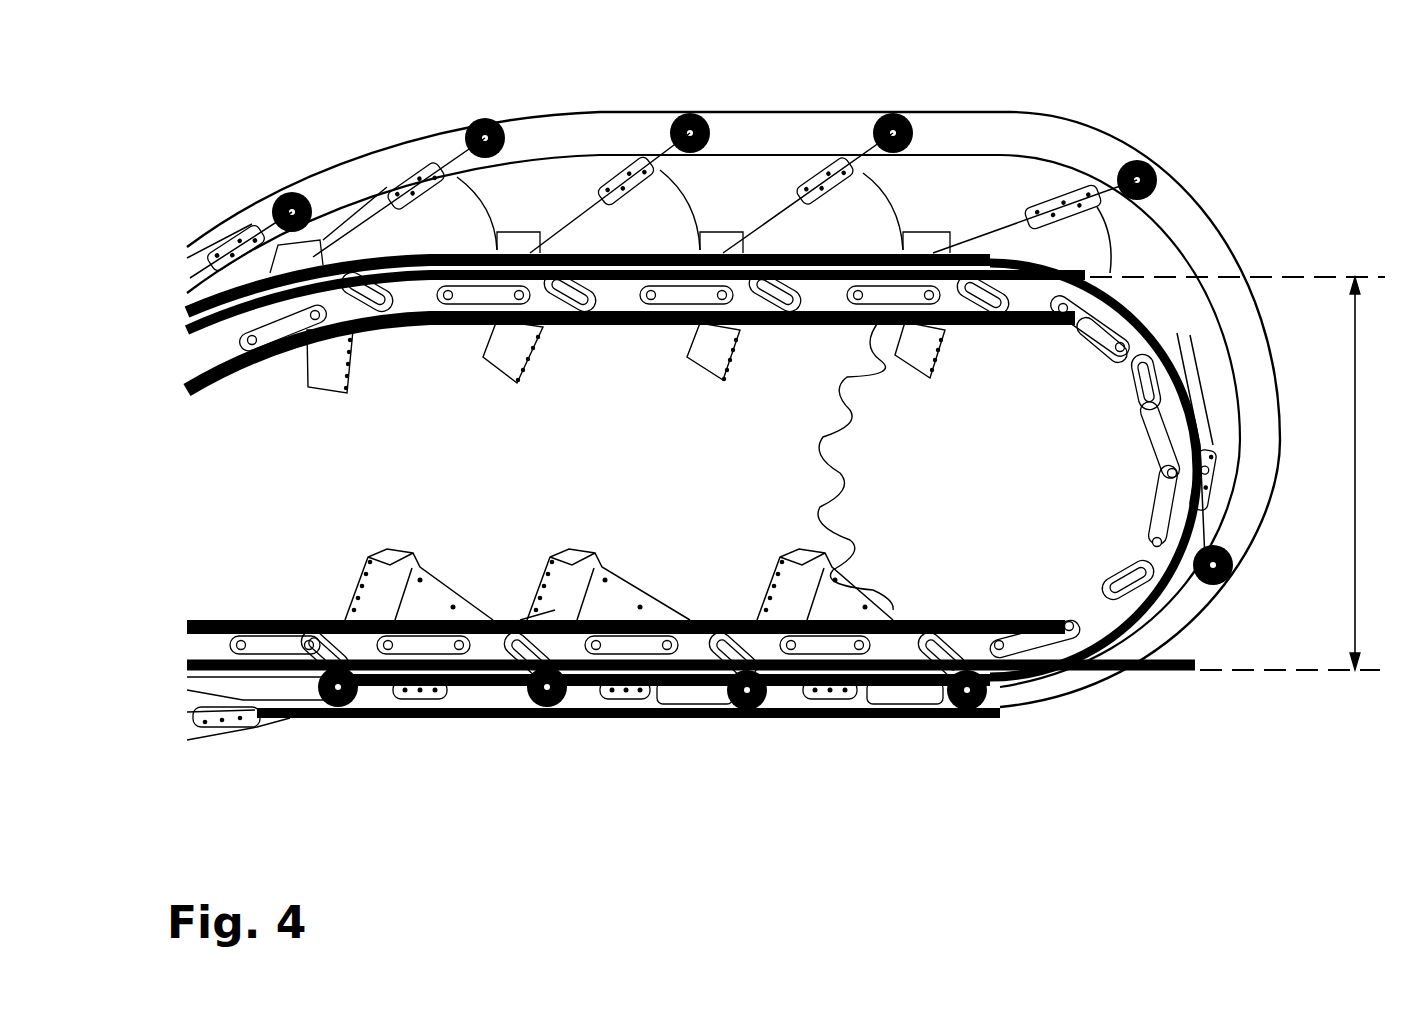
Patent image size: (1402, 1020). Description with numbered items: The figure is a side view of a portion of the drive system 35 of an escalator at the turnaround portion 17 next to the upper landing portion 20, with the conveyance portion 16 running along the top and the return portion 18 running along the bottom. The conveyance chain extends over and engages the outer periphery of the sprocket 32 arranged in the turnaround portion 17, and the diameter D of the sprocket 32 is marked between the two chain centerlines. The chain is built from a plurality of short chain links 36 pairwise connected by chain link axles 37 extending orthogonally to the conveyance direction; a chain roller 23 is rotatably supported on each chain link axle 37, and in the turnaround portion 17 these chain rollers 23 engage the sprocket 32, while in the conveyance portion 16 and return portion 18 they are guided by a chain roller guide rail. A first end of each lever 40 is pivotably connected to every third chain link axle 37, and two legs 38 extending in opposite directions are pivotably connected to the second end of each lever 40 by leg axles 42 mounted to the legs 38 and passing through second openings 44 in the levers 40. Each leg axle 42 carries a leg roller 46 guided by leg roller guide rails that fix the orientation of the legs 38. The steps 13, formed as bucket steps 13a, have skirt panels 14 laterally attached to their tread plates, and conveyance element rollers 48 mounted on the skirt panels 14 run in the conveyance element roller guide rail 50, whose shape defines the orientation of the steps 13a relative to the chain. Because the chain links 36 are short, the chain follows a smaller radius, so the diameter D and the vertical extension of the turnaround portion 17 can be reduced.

The step 13 is at (1212, 424).
The bucket step 13a is at (758, 585).
The skirt panel 14 is at (1093, 257).
The conveyance portion 16 is at (232, 188).
The turnaround portion 17 is at (1285, 256).
The return portion 18 is at (515, 760).
The upper landing portion 20 is at (1294, 102).
The chain roller 23 is at (1063, 622).
The sprocket 32 is at (810, 476).
The drive system 35 is at (529, 610).
The chain link 36 is at (1160, 434).
The chain link axle 37 is at (1115, 368).
The leg 38 is at (867, 262).
The lever 40 is at (1120, 595).
The leg axle 42 is at (543, 318).
The second opening 44 is at (570, 342).
The leg roller 46 is at (1000, 262).
The conveyance element roller 48 is at (1235, 570).
The conveyance element roller guide rail 50 is at (1060, 108).
The diameter of the sprocket D is at (1237, 473).